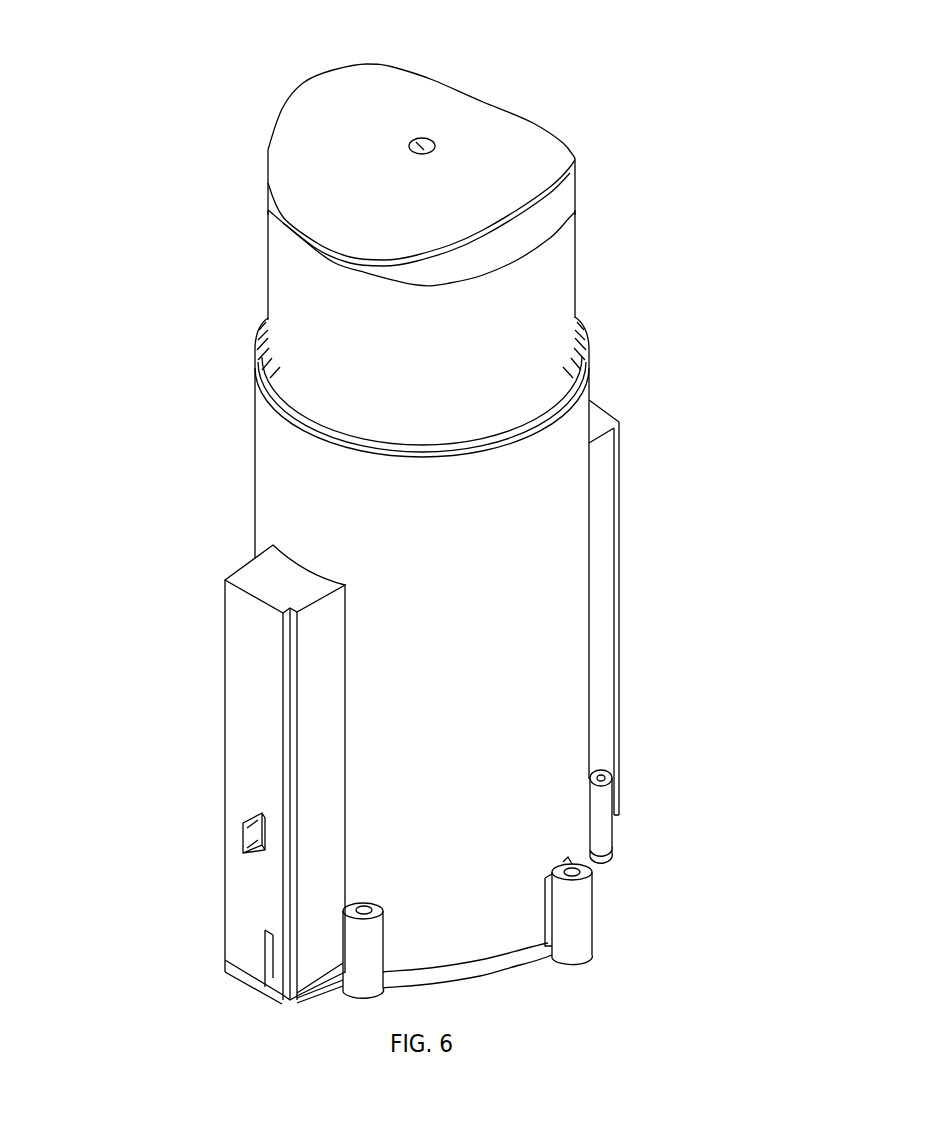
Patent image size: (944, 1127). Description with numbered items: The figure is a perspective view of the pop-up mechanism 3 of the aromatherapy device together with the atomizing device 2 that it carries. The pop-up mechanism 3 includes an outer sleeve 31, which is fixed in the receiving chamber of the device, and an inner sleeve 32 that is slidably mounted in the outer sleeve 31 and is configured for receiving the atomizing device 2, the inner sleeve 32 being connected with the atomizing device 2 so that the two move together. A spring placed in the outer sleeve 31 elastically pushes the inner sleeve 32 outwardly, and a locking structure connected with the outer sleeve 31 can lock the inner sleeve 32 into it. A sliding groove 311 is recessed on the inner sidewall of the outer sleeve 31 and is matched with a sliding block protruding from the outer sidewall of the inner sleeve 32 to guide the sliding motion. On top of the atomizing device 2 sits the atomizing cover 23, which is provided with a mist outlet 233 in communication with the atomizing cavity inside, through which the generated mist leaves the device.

The atomizing device 2 is at (245, 283).
The atomizing cover 23 is at (531, 333).
The mist outlet 233 is at (423, 141).
The pop-up mechanism 3 is at (242, 528).
The outer sleeve 31 is at (523, 692).
The inner sleeve 32 is at (590, 368).
The sliding groove 311 is at (250, 835).